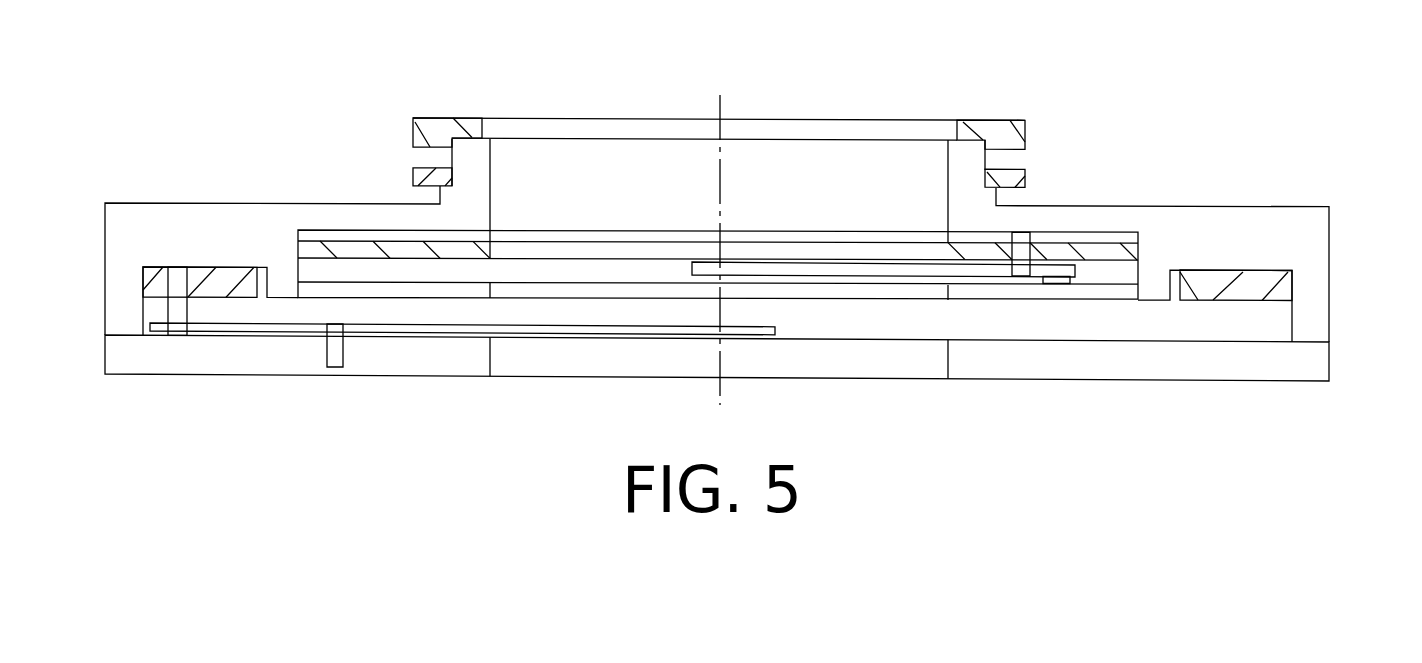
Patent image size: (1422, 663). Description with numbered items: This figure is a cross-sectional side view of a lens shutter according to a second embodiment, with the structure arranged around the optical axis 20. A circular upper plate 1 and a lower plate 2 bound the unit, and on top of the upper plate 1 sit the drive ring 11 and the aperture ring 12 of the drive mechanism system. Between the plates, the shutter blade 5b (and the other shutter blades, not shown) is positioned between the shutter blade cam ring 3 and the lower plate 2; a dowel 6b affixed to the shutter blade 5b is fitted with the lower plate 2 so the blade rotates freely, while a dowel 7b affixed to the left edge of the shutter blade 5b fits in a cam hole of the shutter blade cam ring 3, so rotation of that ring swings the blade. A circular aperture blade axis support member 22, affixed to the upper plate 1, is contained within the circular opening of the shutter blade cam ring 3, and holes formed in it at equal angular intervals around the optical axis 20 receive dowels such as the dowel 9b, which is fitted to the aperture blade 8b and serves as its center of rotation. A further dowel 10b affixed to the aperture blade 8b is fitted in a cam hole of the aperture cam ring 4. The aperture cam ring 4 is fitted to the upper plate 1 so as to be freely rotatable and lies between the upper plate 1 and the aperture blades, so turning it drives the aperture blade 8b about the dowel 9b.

The upper plate 1 is at (1316, 257).
The lower plate 2 is at (1316, 363).
The shutter blade cam ring 3 is at (1247, 281).
The aperture cam ring 4 is at (1118, 245).
The shutter blade 5b is at (245, 330).
The dowel 6b is at (337, 338).
The dowel 7b is at (180, 318).
The aperture blade 8b is at (911, 268).
The dowel 9b is at (1060, 278).
The dowel 10b is at (1021, 248).
The drive ring 11 is at (410, 179).
The aperture ring 12 is at (444, 126).
The optical axis 20 is at (732, 100).
The aperture blade axis support member 22 is at (337, 289).